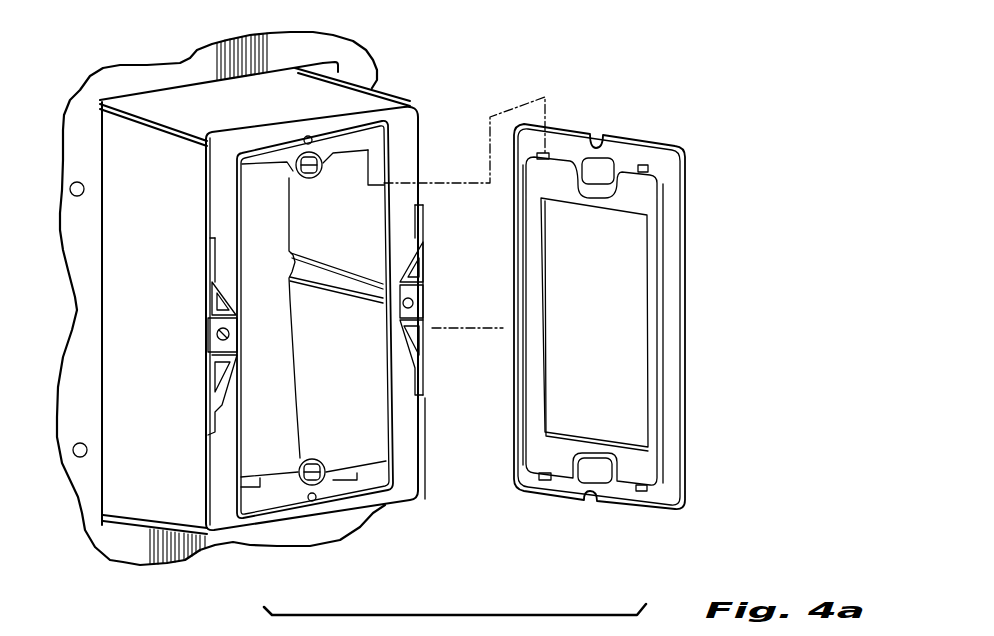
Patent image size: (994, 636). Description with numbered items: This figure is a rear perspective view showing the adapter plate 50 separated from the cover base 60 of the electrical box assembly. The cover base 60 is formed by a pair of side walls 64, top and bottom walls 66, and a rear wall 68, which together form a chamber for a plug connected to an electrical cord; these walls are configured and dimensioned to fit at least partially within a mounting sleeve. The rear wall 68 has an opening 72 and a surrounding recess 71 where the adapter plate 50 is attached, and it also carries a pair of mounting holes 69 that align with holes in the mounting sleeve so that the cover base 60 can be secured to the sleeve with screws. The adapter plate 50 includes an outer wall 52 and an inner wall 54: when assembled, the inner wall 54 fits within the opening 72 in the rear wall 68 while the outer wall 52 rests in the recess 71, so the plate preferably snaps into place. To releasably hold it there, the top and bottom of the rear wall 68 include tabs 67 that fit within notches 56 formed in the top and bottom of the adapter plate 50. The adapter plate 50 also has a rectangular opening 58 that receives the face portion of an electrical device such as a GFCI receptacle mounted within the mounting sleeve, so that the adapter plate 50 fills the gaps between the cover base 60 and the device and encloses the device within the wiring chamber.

The adapter plate 50 is at (707, 127).
The outer wall 52 is at (692, 228).
The inner wall 54 is at (533, 425).
The notches 56 is at (548, 153).
The rectangular opening 58 is at (568, 357).
The cover base 60 is at (197, 79).
The side walls 64 is at (138, 416).
The top and bottom walls 66 is at (287, 83).
The tabs 67 is at (258, 170).
The rear wall 68 is at (413, 127).
The mounting holes 69 is at (220, 334).
The recess 71 is at (247, 153).
The opening 72 is at (255, 265).